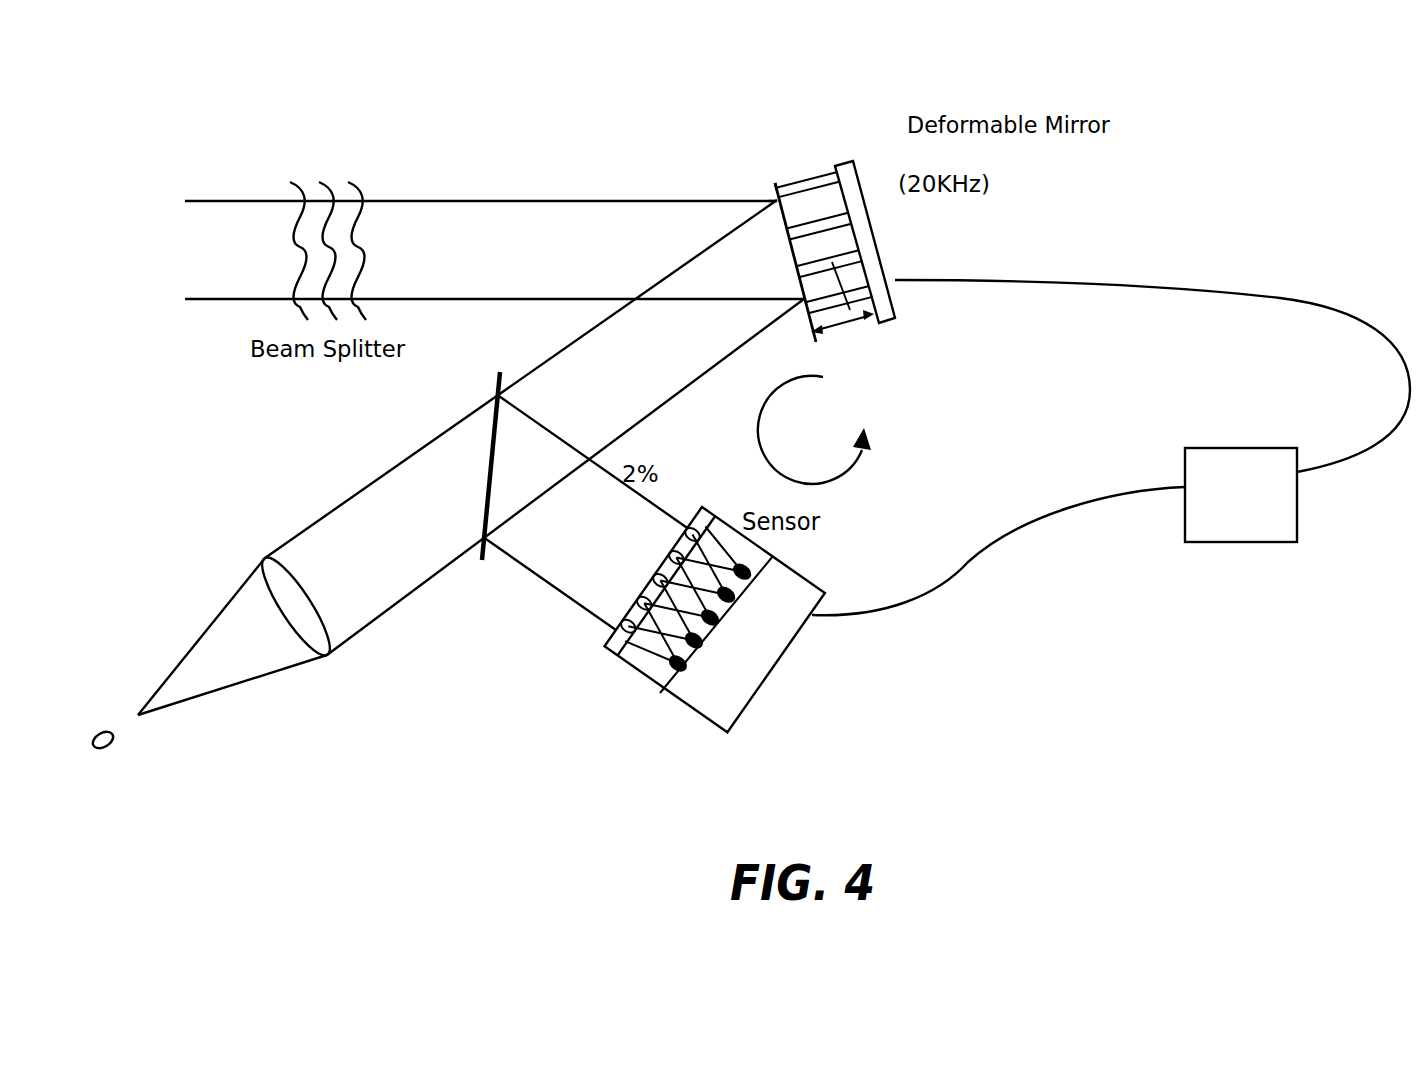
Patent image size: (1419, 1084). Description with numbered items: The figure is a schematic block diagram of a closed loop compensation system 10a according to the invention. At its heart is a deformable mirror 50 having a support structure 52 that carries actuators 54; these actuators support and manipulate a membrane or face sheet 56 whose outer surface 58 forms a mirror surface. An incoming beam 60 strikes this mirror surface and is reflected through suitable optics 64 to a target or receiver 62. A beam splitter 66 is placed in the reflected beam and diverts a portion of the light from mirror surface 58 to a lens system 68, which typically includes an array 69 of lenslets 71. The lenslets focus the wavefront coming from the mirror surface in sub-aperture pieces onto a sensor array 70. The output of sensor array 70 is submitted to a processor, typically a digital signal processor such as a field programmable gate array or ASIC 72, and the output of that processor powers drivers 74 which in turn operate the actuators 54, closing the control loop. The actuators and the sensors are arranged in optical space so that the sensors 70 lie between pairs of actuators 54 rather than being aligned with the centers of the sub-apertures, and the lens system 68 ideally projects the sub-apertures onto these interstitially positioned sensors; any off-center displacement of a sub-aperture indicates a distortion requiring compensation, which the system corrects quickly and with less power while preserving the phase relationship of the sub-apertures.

The closed loop compensation system 10a is at (1236, 182).
The deformable mirror 50 is at (764, 179).
The support structure 52 is at (868, 238).
The actuators 54 is at (820, 331).
The membrane or face sheet 56 is at (778, 186).
The mirror surface 58 is at (773, 197).
The incoming beam 60 is at (428, 243).
The target or receiver 62 is at (103, 731).
The optics 64 is at (262, 566).
The beam splitter 66 is at (490, 462).
The lens system 68 is at (604, 662).
The array of lenslets 69 is at (705, 506).
The sensor array 70 is at (667, 680).
The lenslets 71 is at (652, 580).
The field programmable gate array or ASIC 72 is at (716, 706).
The drivers 74 is at (1242, 448).